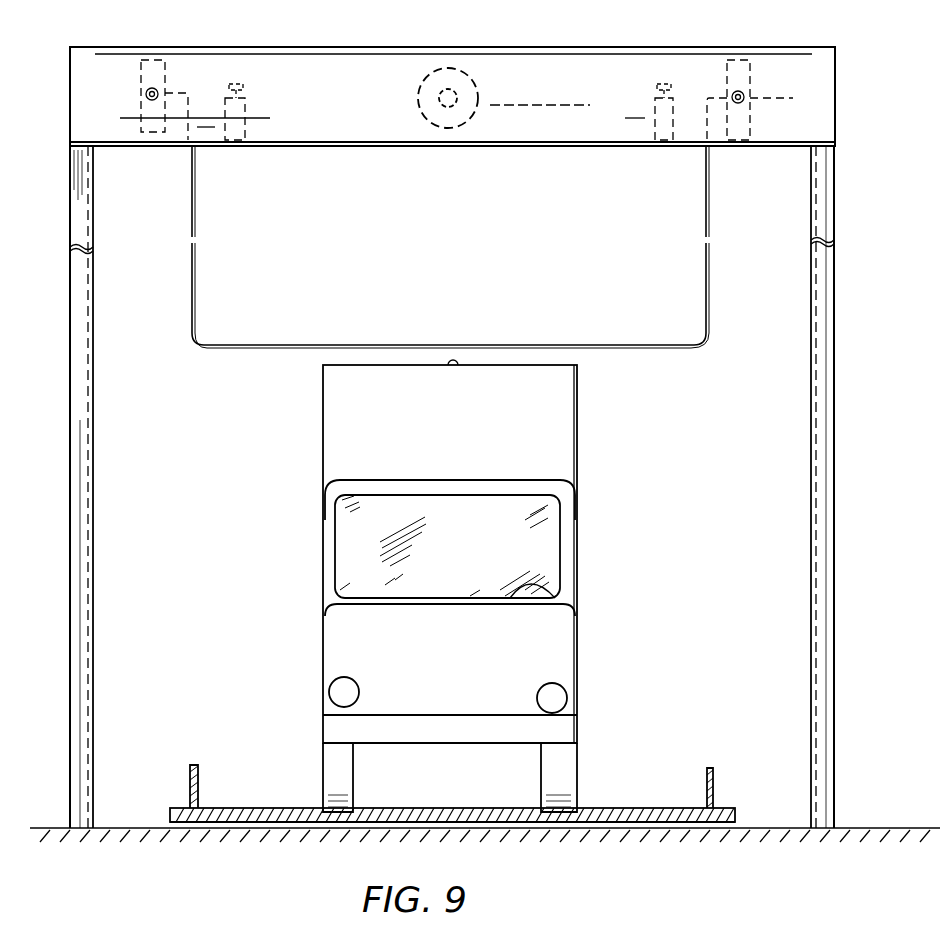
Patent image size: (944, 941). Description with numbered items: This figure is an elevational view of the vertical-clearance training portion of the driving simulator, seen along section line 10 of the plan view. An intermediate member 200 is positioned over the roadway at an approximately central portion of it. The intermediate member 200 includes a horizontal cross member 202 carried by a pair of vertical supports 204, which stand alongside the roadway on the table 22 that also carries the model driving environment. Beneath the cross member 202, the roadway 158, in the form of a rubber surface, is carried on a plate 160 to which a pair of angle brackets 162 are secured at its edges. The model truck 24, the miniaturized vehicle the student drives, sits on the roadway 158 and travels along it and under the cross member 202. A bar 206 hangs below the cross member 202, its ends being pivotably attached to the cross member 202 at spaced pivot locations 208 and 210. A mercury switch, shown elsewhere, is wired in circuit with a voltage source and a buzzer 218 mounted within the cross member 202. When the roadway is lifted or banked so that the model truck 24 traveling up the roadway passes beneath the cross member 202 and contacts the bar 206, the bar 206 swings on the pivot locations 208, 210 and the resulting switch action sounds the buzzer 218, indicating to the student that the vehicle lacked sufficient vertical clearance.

The section line 10 is at (805, 30).
The table 22 is at (866, 830).
The model truck 24 is at (578, 463).
The roadway 158 is at (279, 808).
The plate 160 is at (242, 823).
The angle brackets 162 is at (190, 772).
The intermediate member 200 is at (283, 46).
The cross member 202 is at (524, 72).
The vertical supports 204 is at (70, 430).
The bar 206 is at (277, 348).
The pivot location 208 is at (150, 88).
The pivot location 210 is at (741, 90).
The buzzer 218 is at (450, 75).